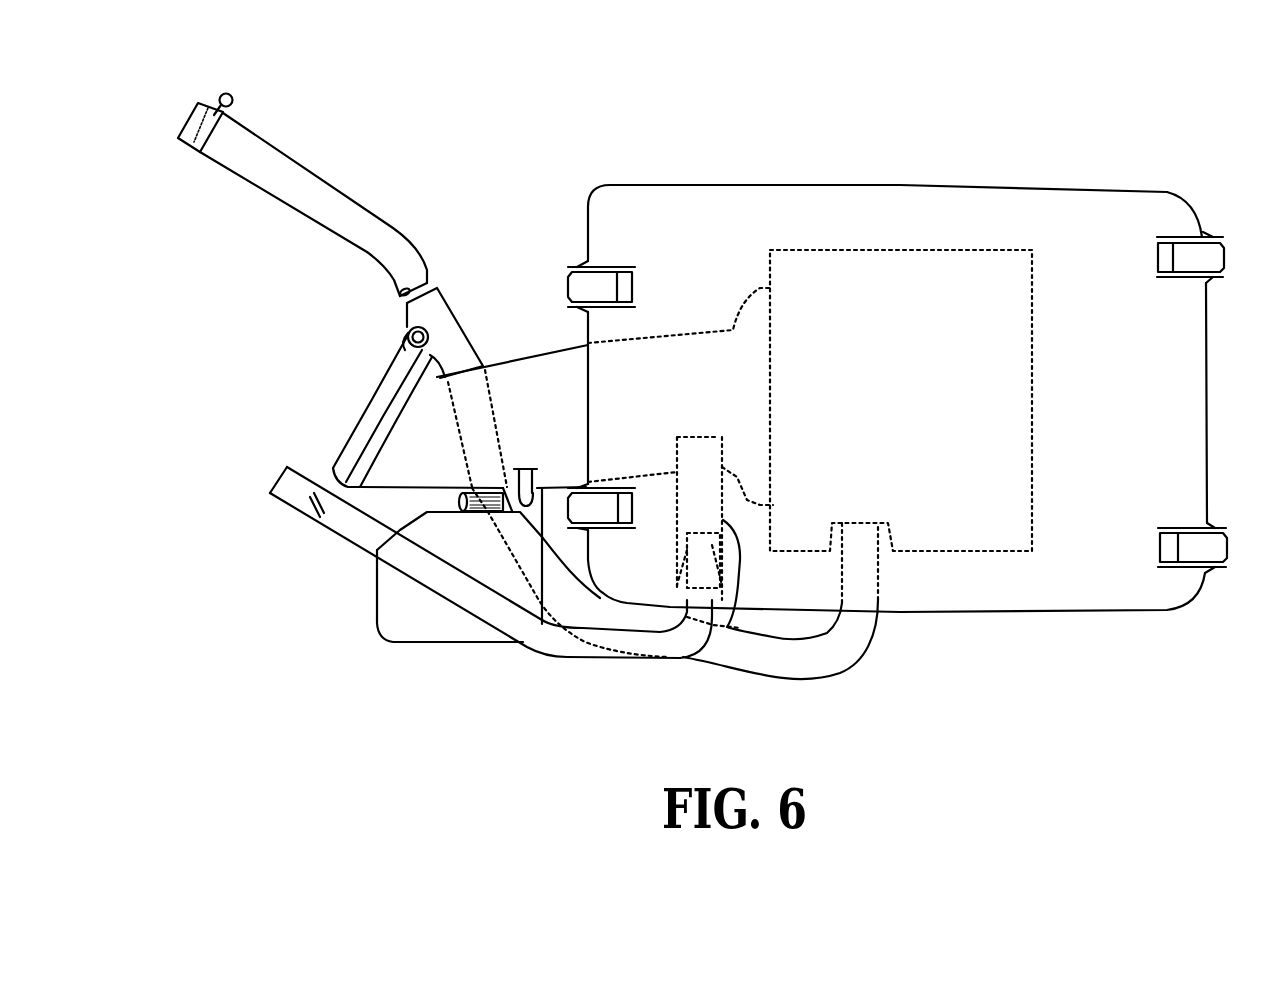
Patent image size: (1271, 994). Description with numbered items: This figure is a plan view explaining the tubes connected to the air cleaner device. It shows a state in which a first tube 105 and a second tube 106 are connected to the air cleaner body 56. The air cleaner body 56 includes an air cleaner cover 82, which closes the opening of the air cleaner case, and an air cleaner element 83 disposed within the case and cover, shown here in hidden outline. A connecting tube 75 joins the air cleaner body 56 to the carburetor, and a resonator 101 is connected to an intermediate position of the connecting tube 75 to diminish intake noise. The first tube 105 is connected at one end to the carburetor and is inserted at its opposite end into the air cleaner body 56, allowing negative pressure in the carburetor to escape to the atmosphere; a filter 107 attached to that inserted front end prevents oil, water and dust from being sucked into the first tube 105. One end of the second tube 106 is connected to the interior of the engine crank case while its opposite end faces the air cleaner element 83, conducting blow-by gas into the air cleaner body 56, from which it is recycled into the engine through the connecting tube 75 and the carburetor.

The air cleaner body 56 is at (906, 183).
The air cleaner cover 82 is at (722, 196).
The air cleaner element 83 is at (1032, 402).
The connecting tube 75 is at (528, 363).
The second tube 106 is at (320, 187).
The first tube 105 is at (345, 522).
The resonator 101 is at (452, 630).
The filter 107 is at (731, 628).